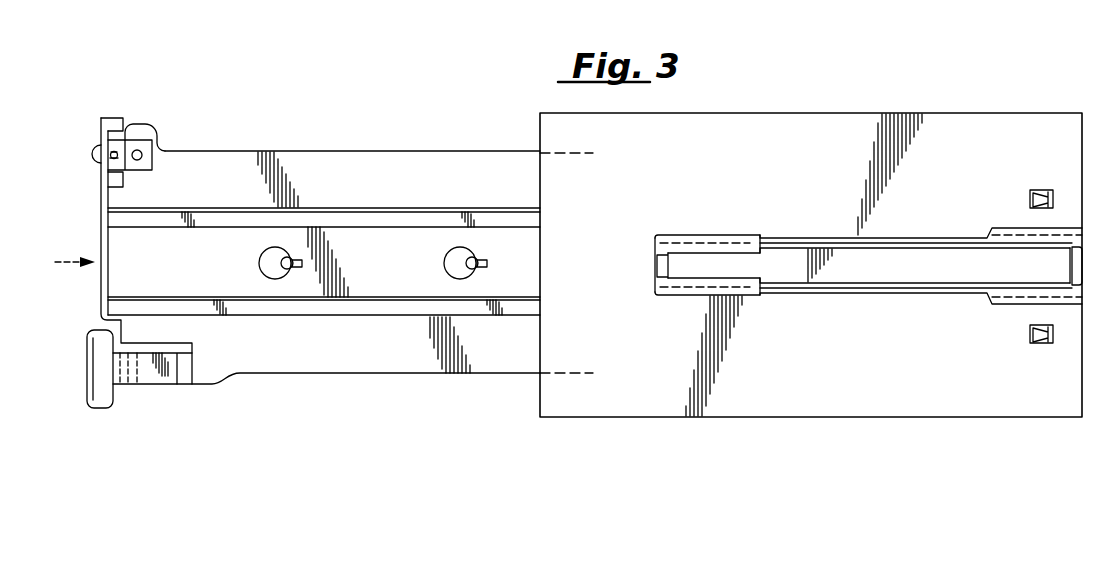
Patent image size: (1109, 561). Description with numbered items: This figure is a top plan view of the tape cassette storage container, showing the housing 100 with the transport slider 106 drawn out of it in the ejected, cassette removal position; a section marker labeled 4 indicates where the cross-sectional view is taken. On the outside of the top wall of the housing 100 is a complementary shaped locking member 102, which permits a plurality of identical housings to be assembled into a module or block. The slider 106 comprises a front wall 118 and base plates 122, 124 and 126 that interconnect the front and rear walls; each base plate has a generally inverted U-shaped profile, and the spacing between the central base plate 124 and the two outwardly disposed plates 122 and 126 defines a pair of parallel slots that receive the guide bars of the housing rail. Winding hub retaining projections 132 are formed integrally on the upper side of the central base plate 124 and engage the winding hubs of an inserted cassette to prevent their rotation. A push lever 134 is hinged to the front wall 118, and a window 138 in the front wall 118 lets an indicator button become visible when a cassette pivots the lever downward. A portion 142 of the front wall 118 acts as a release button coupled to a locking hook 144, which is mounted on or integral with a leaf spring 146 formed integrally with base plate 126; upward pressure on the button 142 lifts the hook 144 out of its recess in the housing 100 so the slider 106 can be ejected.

The housing 100 is at (957, 104).
The locking member 102 is at (797, 237).
The transport slider 106 is at (346, 142).
The front wall 118 is at (107, 236).
The base plate 122 is at (402, 197).
The central base plate 124 is at (402, 275).
The base plate 126 is at (402, 360).
The winding hub retaining projections 132 is at (259, 265).
The push lever 134 is at (158, 143).
The window 138 is at (93, 146).
The release button 142 is at (102, 401).
The locking hook 144 is at (130, 386).
The leaf spring 146 is at (162, 376).
The section line for FIG. 4 is at (75, 248).